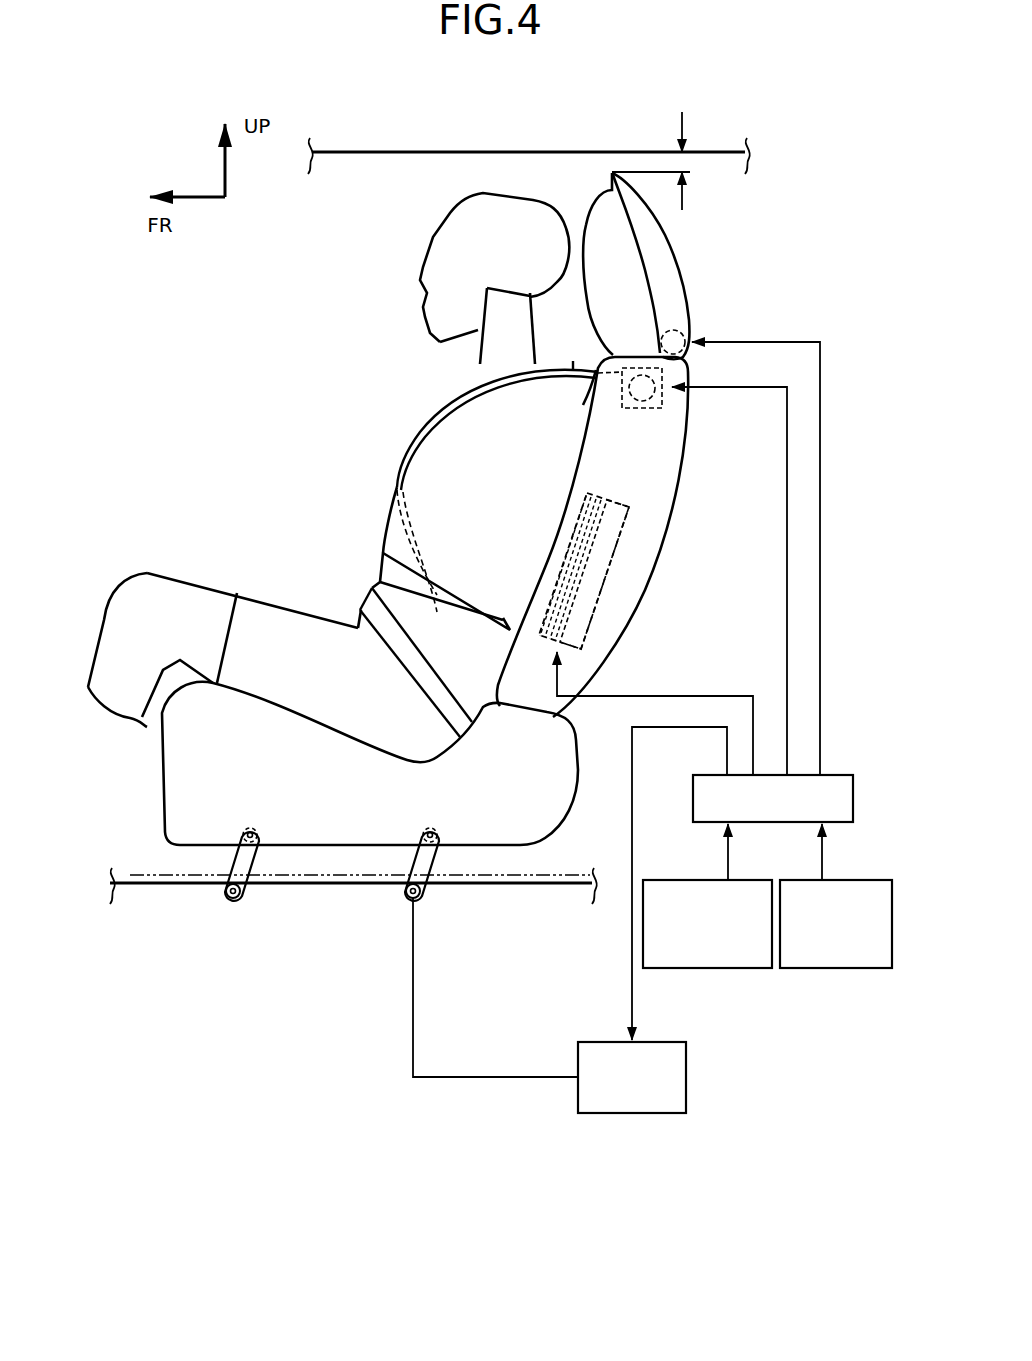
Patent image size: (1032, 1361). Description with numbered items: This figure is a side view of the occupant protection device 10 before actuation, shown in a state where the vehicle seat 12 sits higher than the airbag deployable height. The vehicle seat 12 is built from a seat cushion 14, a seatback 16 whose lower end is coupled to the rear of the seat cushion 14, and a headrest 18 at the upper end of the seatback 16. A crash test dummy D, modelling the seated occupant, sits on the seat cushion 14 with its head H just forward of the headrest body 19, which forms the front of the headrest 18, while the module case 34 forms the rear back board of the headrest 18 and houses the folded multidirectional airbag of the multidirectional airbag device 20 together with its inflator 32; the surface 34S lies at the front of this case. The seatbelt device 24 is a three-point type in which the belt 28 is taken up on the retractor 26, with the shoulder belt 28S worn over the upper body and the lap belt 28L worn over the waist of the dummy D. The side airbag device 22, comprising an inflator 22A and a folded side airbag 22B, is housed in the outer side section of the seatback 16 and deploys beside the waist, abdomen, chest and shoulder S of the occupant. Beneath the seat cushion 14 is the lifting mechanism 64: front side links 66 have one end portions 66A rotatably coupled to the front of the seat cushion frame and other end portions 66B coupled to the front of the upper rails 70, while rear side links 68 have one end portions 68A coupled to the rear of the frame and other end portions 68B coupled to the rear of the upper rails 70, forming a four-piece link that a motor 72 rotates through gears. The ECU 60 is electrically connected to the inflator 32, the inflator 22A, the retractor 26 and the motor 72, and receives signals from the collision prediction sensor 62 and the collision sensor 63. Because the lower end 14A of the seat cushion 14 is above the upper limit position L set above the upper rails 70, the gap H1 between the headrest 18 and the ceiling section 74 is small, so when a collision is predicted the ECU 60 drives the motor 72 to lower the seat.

The occupant protection device 10 is at (341, 356).
The vehicle seat 12 is at (610, 658).
The seat cushion 14 is at (175, 763).
The lower end of the seat cushion 14A is at (340, 848).
The seatback 16 is at (635, 484).
The headrest 18 is at (695, 266).
The headrest body 19 is at (633, 287).
The multidirectional airbag device 20 is at (695, 266).
The side airbag device 22 is at (620, 553).
The inflator 22A is at (588, 594).
The side airbag 22B is at (558, 583).
The seatbelt device 24 is at (356, 578).
The retractor 26 is at (648, 411).
The belt 28 is at (412, 447).
The shoulder belt 28S is at (464, 386).
The lap belt 28L is at (399, 640).
The inflator 32 is at (686, 323).
The module case 34 is at (605, 190).
The headrest front surface 34S is at (599, 254).
The ECU 60 is at (833, 775).
The collision prediction sensor 62 is at (730, 968).
The collision sensor 63 is at (823, 968).
The lifting mechanism 64 is at (318, 906).
The front side links 66 is at (243, 898).
The one end portions of the front side links 66A is at (251, 828).
The other end portions of the front side links 66B is at (229, 897).
The rear side links 68 is at (426, 896).
The one end portions of the rear side links 68A is at (432, 828).
The other end portions of the rear side links 68B is at (411, 898).
The upper rails 70 is at (587, 872).
The motor 72 is at (622, 1113).
The ceiling section 74 is at (358, 160).
The head H is at (455, 231).
The gap H1 is at (685, 160).
The shoulder S is at (558, 386).
The crash test dummy D is at (288, 590).
The upper limit position L is at (145, 872).